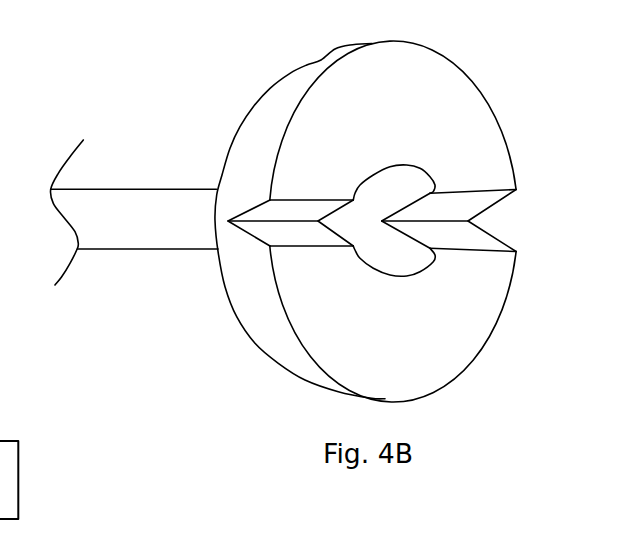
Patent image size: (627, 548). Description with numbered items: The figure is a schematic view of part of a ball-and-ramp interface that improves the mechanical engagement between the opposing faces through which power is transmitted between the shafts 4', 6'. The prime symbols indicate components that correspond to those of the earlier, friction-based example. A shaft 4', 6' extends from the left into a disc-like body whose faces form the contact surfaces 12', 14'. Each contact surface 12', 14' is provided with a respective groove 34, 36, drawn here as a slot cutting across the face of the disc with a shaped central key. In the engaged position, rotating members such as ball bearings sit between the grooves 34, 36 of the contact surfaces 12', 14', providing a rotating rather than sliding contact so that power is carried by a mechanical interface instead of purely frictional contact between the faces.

The input shaft 4' is at (134, 171).
The output shaft 6' is at (134, 171).
The contact surface 12' is at (350, 224).
The contact surface 14' is at (350, 224).
The groove 34 is at (307, 286).
The groove 36 is at (430, 233).